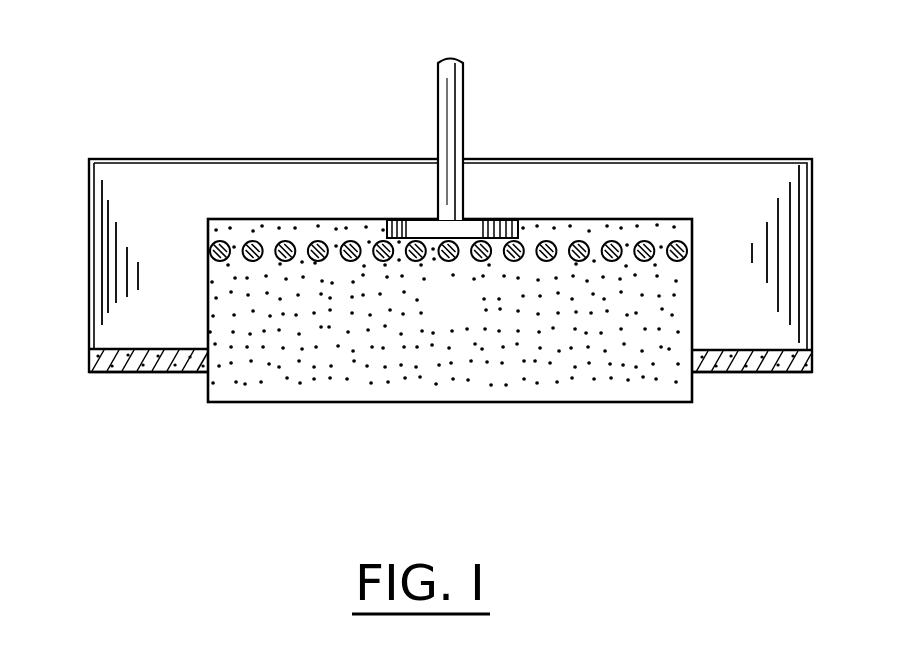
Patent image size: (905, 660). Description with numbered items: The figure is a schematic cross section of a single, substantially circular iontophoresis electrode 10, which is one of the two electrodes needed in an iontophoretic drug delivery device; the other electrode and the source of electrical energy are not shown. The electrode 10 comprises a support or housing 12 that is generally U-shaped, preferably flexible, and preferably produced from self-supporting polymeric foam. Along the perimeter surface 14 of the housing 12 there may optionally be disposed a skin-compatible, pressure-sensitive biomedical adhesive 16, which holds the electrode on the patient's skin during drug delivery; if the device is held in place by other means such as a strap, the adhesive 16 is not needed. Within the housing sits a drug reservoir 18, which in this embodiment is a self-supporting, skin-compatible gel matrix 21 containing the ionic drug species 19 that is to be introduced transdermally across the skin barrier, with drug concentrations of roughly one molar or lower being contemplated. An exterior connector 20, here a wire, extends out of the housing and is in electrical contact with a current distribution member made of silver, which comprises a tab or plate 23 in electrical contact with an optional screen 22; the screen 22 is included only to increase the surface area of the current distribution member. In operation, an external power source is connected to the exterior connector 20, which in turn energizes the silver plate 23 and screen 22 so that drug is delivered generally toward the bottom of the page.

The electrode 10 is at (715, 95).
The support or housing 12 is at (148, 300).
The perimeter surface 14 is at (122, 372).
The biomedical adhesive 16 is at (178, 372).
The drug reservoir 18 is at (450, 359).
The ionic drug species 19 is at (306, 368).
The exterior connector 20 is at (463, 90).
The gel matrix 21 is at (478, 365).
The screen 22 is at (318, 240).
The tab or plate 23 is at (492, 218).